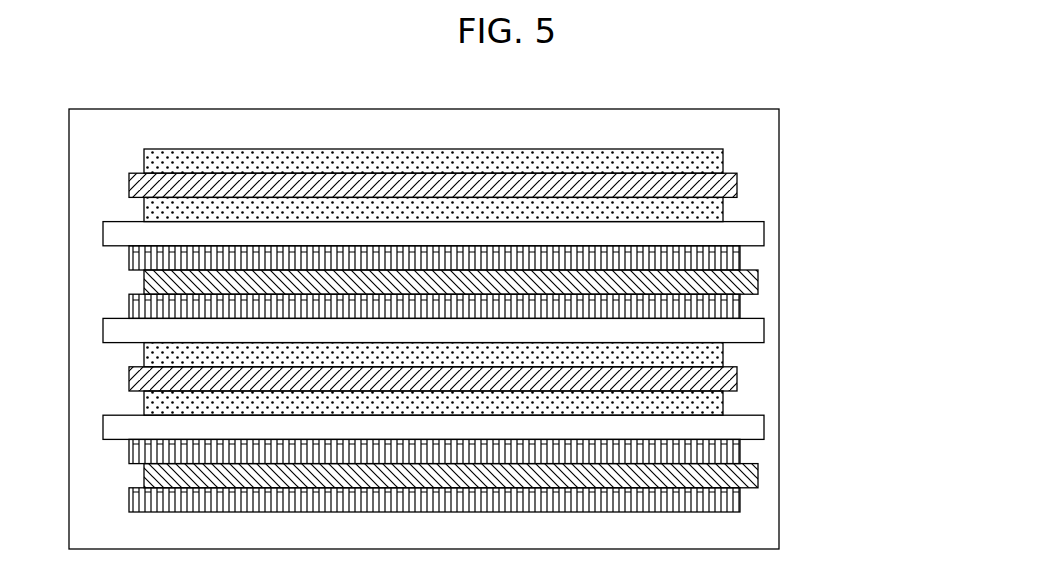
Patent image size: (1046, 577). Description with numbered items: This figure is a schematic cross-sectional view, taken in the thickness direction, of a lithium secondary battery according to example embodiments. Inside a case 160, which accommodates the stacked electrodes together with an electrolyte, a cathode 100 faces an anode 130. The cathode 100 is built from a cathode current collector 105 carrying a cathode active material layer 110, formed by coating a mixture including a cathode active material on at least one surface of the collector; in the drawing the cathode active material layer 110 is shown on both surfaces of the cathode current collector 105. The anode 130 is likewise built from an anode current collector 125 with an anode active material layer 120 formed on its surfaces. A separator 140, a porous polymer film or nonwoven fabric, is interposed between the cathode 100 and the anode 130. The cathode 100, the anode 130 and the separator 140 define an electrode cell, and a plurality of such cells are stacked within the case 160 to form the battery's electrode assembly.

The cathode 100 is at (530, 274).
The cathode current collector 105 is at (737, 184).
The cathode active material layer 110 is at (723, 160).
The anode active material layer 120 is at (740, 253).
The anode current collector 125 is at (758, 282).
The anode 130 is at (530, 375).
The separator 140 is at (653, 232).
The case 160 is at (779, 456).